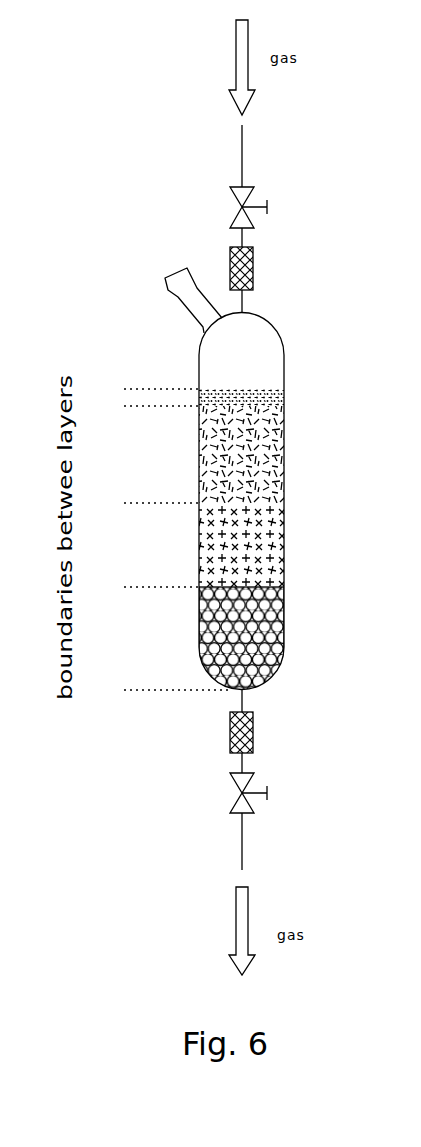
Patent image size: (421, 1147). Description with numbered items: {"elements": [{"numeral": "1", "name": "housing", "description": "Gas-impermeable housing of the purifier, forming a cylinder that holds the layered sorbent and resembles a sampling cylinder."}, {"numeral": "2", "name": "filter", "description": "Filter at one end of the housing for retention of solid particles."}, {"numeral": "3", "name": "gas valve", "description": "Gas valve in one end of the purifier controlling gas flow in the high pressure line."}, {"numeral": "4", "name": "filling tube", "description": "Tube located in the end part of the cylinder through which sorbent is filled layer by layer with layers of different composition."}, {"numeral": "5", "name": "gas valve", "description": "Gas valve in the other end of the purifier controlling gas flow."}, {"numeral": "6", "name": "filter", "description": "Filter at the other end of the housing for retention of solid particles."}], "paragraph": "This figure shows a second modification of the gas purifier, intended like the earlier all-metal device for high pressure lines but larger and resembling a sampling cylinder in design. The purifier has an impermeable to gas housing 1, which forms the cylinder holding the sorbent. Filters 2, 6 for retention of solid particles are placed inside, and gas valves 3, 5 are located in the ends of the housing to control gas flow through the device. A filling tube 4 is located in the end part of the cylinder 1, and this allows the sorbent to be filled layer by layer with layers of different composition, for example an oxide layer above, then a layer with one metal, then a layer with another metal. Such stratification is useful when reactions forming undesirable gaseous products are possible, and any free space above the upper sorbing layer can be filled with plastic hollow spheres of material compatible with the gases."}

The reactor vessel with layered bed 1 is at (285, 468).
The inlet filter 2 is at (255, 259).
The inlet valve 3 is at (235, 212).
The side arm with joint 4 is at (170, 270).
The outlet valve 5 is at (230, 802).
The outlet filter 6 is at (255, 727).